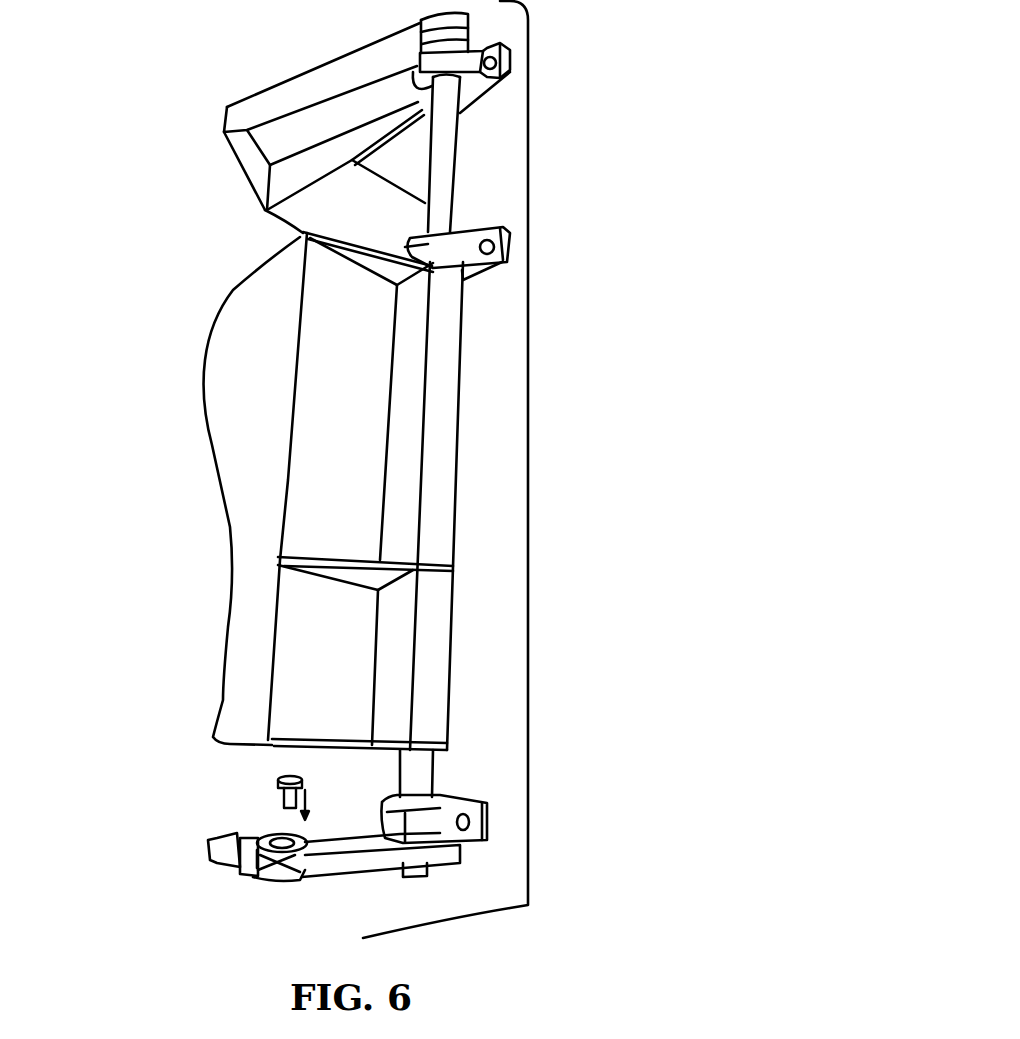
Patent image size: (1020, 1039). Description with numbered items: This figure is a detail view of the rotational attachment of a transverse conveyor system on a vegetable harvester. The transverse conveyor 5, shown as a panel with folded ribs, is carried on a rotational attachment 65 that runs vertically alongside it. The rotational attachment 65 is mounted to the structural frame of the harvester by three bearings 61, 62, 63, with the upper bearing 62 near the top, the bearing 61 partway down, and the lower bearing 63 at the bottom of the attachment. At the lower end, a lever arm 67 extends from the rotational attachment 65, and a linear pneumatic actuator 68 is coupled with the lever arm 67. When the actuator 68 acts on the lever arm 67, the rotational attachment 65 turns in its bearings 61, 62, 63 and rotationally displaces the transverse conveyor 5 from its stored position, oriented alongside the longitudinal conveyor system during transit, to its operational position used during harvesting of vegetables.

The transverse conveyor 5 is at (245, 455).
The bearing 61 is at (512, 240).
The bearing 62 is at (512, 60).
The bearing 63 is at (490, 830).
The rotational attachment 65 is at (435, 503).
The lever arm 67 is at (260, 875).
The linear pneumatic actuator 68 is at (280, 833).